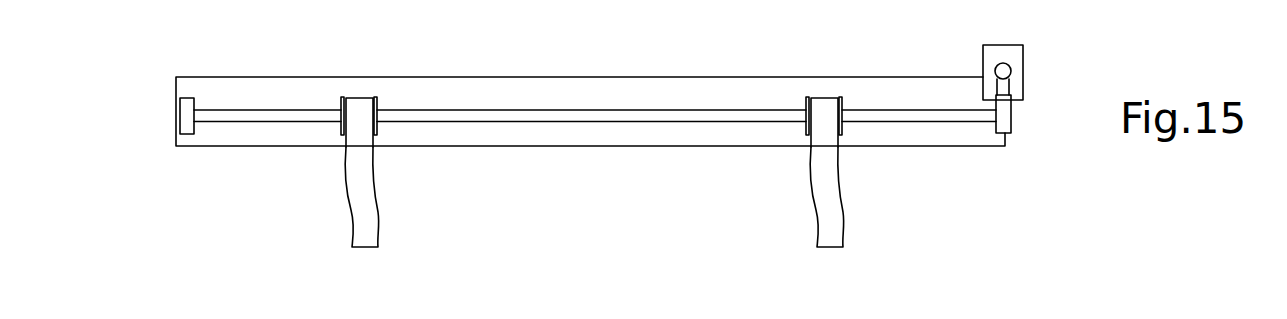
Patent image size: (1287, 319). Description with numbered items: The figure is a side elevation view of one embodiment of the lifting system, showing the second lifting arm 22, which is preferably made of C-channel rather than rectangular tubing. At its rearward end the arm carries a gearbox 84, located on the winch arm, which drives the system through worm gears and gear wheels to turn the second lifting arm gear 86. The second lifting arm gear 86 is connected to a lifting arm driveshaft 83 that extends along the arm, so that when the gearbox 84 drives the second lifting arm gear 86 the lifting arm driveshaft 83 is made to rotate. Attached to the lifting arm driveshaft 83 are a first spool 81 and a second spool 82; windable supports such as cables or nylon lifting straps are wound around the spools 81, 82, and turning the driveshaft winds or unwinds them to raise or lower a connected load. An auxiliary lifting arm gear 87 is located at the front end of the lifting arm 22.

The second lifting arm 22 is at (940, 147).
The first spool 81 is at (377, 107).
The second spool 82 is at (842, 103).
The lifting arm driveshaft 83 is at (933, 110).
The gearbox 84 is at (1023, 59).
The second lifting arm gear 86 is at (1011, 119).
The auxiliary lifting arm gear 87 is at (180, 100).